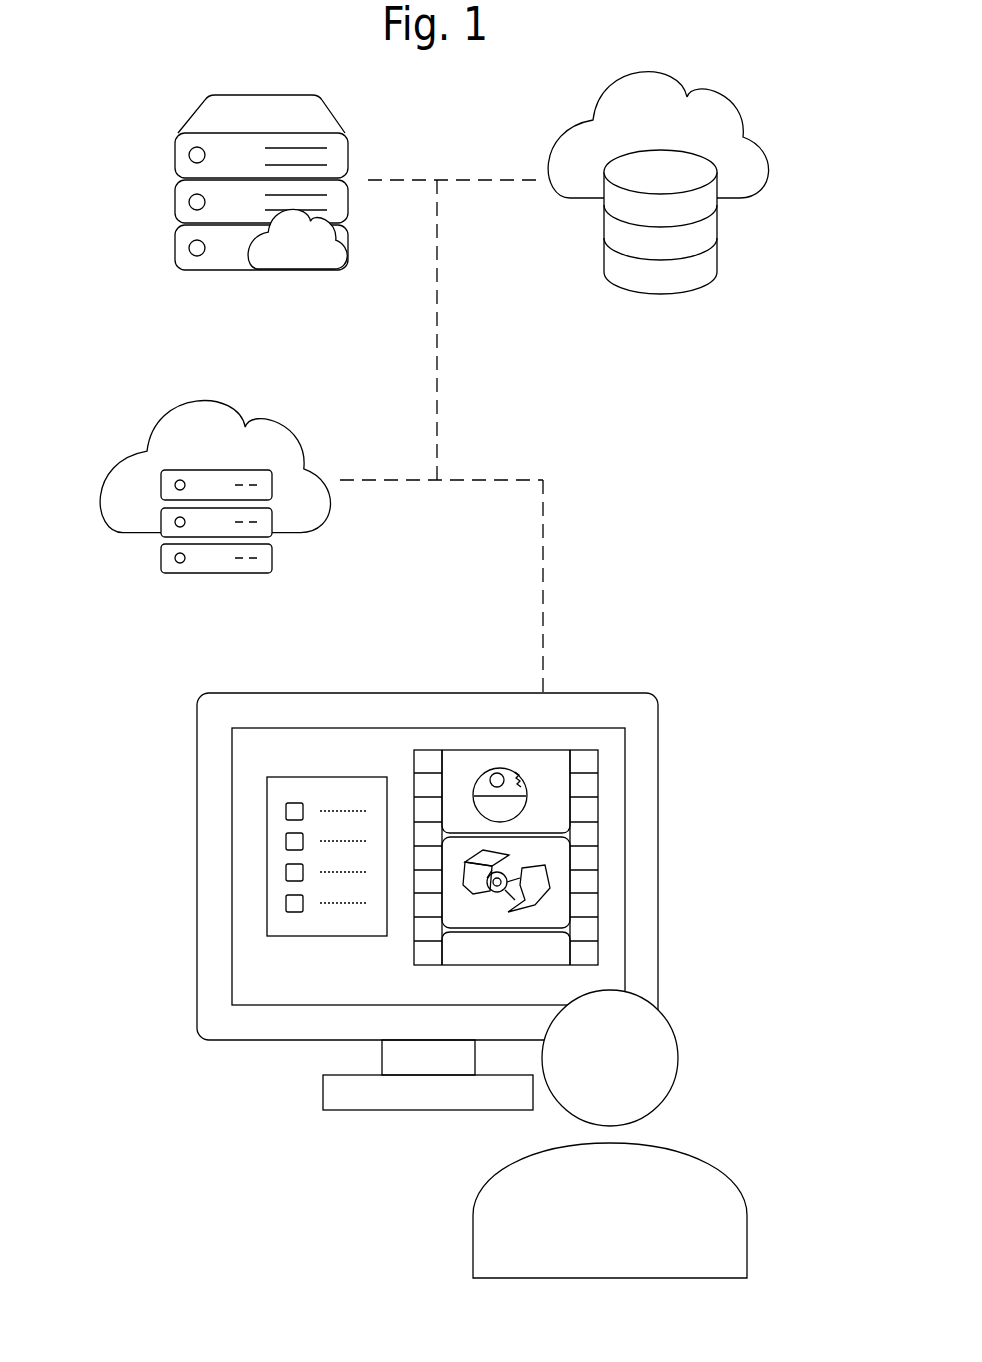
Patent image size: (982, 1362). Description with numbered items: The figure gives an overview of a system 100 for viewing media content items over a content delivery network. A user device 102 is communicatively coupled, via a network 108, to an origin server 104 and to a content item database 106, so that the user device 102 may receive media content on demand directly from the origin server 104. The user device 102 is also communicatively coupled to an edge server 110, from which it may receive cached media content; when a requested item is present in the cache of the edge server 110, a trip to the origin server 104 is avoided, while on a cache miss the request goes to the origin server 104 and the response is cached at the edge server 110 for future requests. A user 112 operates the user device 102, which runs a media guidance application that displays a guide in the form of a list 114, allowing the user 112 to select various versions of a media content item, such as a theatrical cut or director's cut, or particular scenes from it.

The system 100 is at (657, 437).
The user device 102 is at (384, 693).
The origin server 104 is at (160, 133).
The content item database 106 is at (690, 292).
The network 108 is at (311, 262).
The edge server 110 is at (197, 573).
The user 112 is at (473, 1238).
The list 114 is at (267, 849).